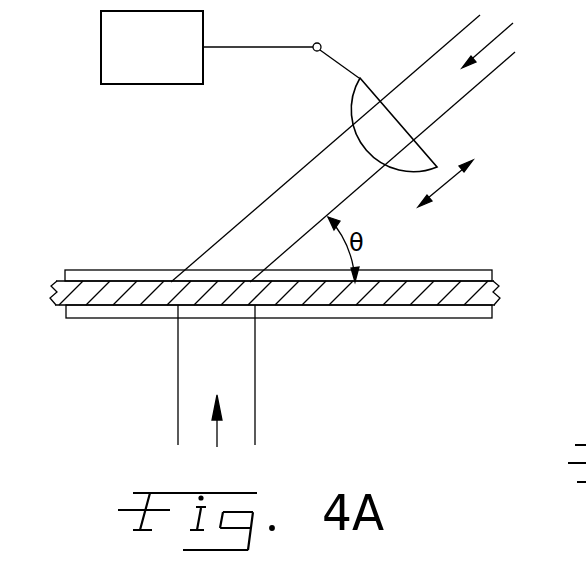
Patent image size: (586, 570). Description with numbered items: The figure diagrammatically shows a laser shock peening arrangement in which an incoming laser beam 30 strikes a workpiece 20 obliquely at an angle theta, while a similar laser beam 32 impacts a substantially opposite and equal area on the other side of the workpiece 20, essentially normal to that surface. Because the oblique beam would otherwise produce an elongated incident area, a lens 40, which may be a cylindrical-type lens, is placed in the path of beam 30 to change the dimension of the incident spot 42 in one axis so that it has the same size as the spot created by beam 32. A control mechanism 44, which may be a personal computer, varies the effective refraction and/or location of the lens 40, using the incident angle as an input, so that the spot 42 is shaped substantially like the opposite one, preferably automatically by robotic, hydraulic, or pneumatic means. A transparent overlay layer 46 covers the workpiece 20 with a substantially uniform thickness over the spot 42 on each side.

The workpiece 20 is at (490, 297).
The incoming laser beam 30 is at (457, 93).
The laser beam 32 is at (243, 407).
The lens 40 is at (367, 90).
The incident spot 42 is at (222, 282).
The control mechanism 44 is at (118, 82).
The transparent overlay layer 46 is at (90, 272).